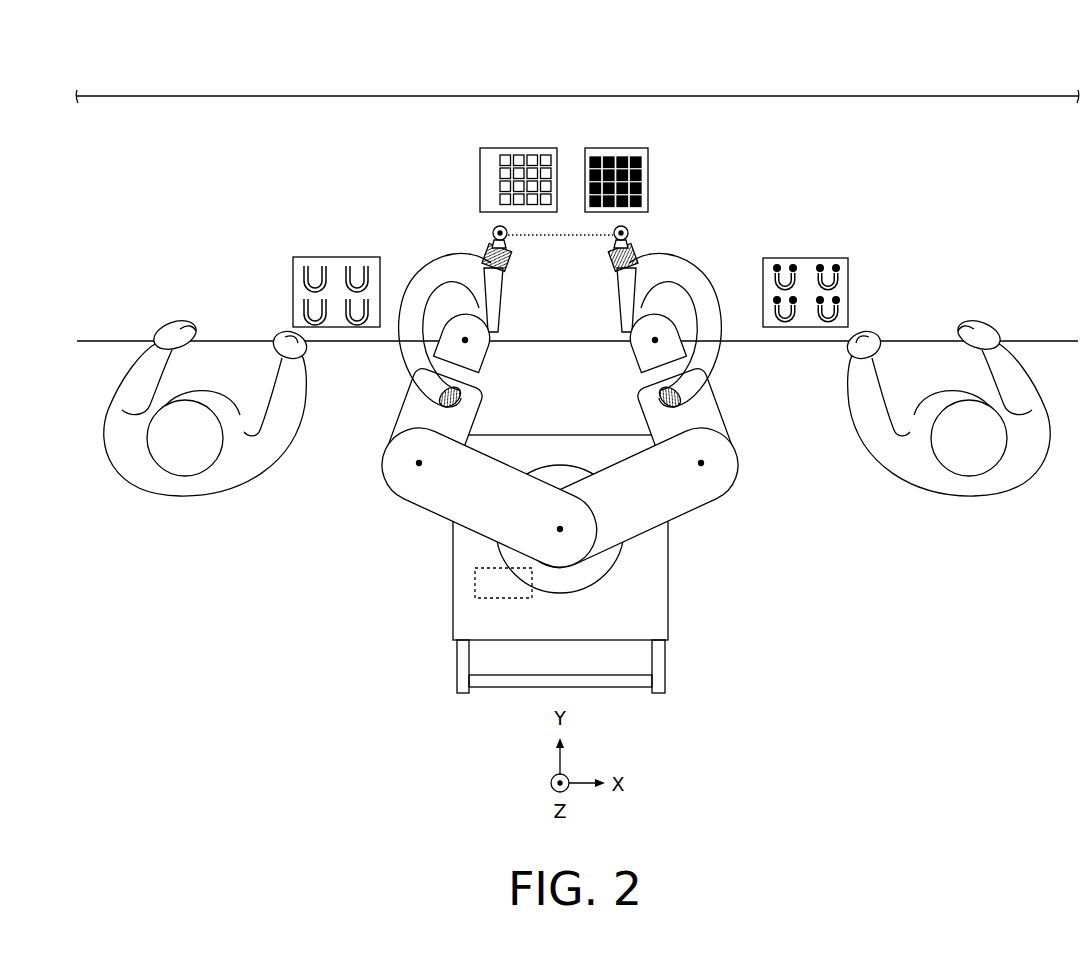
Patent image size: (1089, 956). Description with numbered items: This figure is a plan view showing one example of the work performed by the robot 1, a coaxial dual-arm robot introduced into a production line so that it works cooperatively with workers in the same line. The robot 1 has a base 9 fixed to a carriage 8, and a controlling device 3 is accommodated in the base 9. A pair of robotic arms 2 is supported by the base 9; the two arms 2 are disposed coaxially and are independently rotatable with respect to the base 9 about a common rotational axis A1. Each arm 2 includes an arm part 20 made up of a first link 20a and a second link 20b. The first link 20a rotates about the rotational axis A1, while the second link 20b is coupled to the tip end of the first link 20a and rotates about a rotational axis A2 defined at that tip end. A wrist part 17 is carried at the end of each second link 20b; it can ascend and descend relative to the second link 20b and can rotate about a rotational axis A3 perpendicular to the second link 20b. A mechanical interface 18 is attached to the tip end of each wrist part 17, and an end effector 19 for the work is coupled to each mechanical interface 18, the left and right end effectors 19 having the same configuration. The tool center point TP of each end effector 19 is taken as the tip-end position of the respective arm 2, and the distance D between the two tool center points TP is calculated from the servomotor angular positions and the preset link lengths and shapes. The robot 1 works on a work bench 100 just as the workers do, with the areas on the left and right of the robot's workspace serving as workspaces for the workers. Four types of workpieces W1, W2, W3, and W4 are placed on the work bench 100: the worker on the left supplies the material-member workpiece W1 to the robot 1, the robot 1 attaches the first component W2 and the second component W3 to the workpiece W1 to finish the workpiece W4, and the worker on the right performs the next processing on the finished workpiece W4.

The robot 1 is at (726, 58).
The work bench 100 is at (965, 95).
The robotic arm 2 is at (560, 367).
The controlling device 3 is at (472, 584).
The carriage 8 is at (622, 564).
The base 9 is at (656, 540).
The wrist part 17 is at (562, 267).
The mechanical interface 18 is at (637, 258).
The end effector 19 is at (633, 247).
The arm part 20 is at (560, 367).
The first link 20a is at (696, 498).
The second link 20b is at (713, 398).
The rotational axis A1 is at (563, 532).
The rotational axis A2 is at (663, 486).
The rotational axis A3 is at (650, 337).
The tool center point TP is at (632, 238).
The distance D is at (560, 248).
The workpiece W1 is at (332, 256).
The workpiece W2 is at (522, 147).
The workpiece W3 is at (621, 147).
The workpiece W4 is at (803, 257).